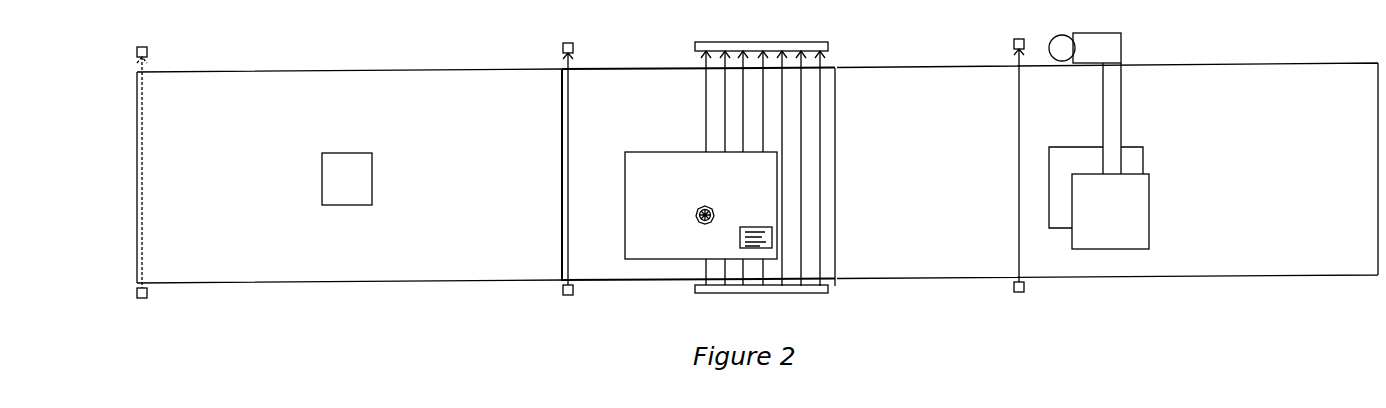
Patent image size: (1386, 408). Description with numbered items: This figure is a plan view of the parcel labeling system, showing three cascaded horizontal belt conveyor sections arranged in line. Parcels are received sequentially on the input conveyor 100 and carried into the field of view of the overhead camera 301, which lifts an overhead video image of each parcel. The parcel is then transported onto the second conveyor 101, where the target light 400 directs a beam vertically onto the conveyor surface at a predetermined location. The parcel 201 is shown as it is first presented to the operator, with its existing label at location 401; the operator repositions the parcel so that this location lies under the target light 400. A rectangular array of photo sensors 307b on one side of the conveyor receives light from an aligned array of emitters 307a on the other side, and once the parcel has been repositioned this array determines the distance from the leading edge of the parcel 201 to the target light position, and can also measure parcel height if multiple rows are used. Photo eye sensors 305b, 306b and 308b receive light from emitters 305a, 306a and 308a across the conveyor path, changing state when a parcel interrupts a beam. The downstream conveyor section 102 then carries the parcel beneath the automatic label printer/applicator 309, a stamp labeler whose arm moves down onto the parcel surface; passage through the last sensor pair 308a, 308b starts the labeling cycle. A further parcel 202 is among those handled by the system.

The input conveyor 100 is at (250, 72).
The second conveyor 101 is at (640, 67).
The downstream conveyor section 102 is at (942, 67).
The parcel 201 is at (623, 177).
The parcel 202 is at (1145, 147).
The overhead camera 301 is at (320, 179).
The emitter 305a is at (135, 285).
The photo eye sensor 305b is at (136, 57).
The emitter 306a is at (561, 283).
The photo eye sensor 306b is at (561, 57).
The array of emitters 307a is at (830, 287).
The array of photo sensors 307b is at (828, 52).
The emitter 308a is at (1015, 283).
The photo eye sensor 308b is at (1013, 49).
The automatic label printer/applicator 309 is at (1150, 200).
The target light 400 is at (702, 205).
The existing label location 401 is at (740, 238).